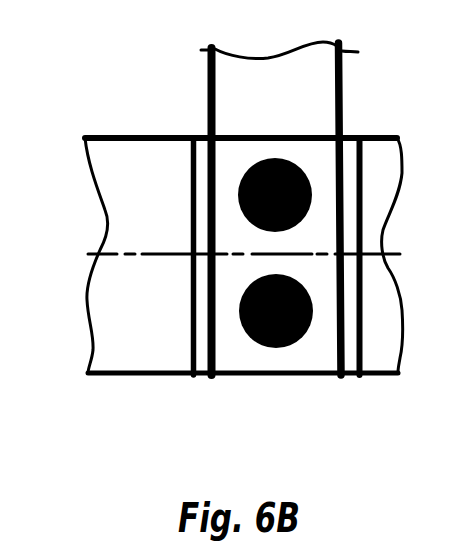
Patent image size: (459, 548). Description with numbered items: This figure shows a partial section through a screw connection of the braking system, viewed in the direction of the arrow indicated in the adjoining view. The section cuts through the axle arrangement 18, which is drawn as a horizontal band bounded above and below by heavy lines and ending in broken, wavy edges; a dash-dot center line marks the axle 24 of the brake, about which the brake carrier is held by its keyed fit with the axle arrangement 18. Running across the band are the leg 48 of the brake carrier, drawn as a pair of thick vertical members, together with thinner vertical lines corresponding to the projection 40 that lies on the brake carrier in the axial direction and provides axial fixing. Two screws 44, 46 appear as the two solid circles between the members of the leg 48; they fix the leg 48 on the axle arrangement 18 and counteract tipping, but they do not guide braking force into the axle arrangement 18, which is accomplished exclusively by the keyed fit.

The axle arrangement 18 is at (127, 138).
The axle 24 is at (216, 230).
The projection 40 is at (200, 377).
The screw 44 is at (260, 157).
The screw 46 is at (293, 343).
The leg 48 is at (340, 93).